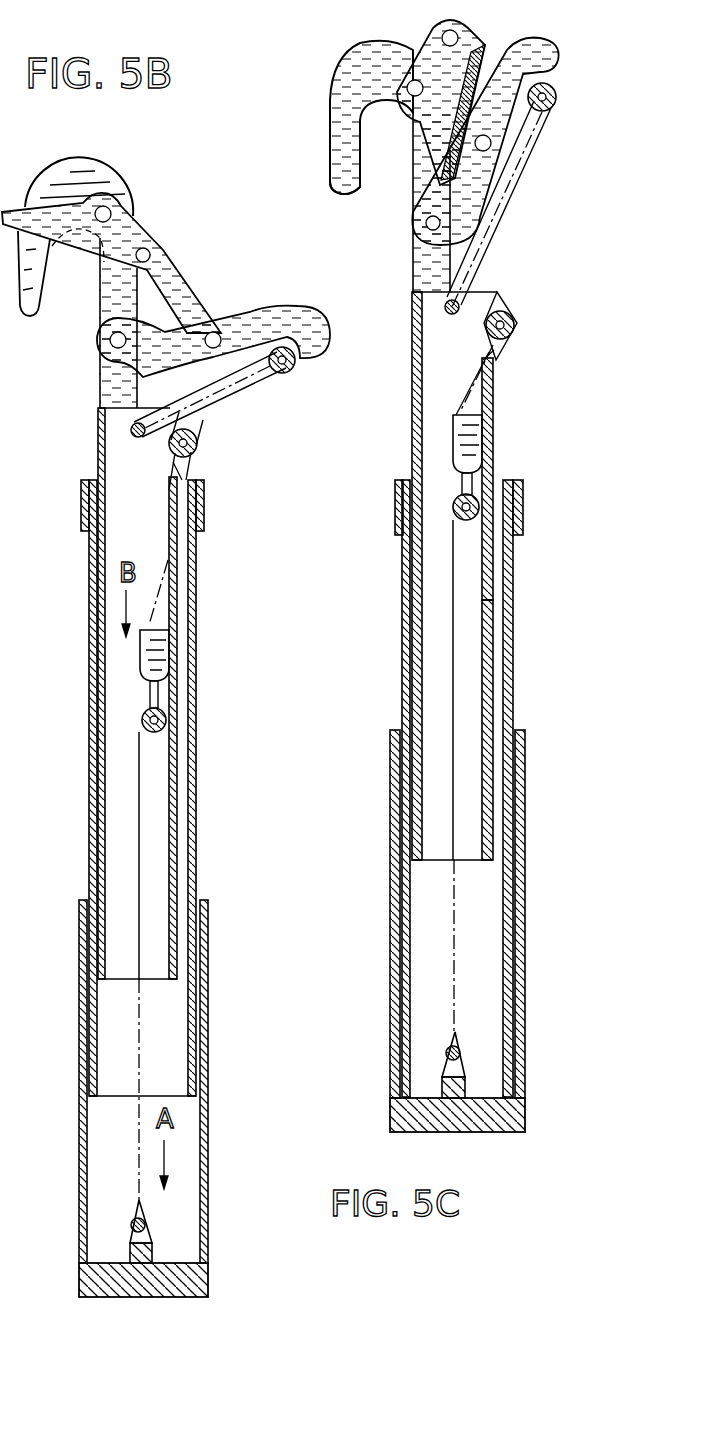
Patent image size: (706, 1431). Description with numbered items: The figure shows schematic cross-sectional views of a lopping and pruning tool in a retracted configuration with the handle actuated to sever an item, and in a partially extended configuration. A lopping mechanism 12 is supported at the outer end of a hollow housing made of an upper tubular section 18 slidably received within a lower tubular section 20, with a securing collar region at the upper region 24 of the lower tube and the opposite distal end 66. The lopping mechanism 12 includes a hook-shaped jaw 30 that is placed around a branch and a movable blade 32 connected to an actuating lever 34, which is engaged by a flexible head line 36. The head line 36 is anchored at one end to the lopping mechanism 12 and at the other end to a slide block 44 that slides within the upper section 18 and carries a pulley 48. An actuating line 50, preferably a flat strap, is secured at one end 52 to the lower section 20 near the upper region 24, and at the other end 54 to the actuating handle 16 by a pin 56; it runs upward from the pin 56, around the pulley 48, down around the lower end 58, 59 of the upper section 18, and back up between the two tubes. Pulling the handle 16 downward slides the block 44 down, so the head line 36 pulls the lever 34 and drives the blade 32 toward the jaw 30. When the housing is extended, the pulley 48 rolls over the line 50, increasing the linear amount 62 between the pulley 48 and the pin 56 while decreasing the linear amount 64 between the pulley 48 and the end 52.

In FIG. 5B, the lopping mechanism 12 is at (82, 162).
In FIG. 5C, the lopping mechanism 12 is at (342, 59).
In FIG. 5B, the actuating handle 16 is at (85, 1275).
In FIG. 5C, the actuating handle 16 is at (397, 1114).
In FIG. 5B, the upper tubular section 18 is at (95, 832).
In FIG. 5C, the upper tubular section 18 is at (418, 680).
In FIG. 5B, the lower tubular section 20 is at (192, 1050).
In FIG. 5C, the lower tubular section 20 is at (400, 590).
In FIG. 5B, the upper region 24 is at (86, 517).
In FIG. 5C, the upper region 24 is at (395, 518).
In FIG. 5B, the hook-shaped jaw 30 is at (37, 317).
In FIG. 5C, the hook-shaped jaw 30 is at (333, 189).
In FIG. 5B, the movable blade 32 is at (8, 211).
In FIG. 5C, the movable blade 32 is at (413, 158).
In FIG. 5B, the actuating lever 34 is at (304, 305).
In FIG. 5C, the actuating lever 34 is at (530, 48).
In FIG. 5B, the head line 36 is at (262, 392).
In FIG. 5C, the head line 36 is at (513, 233).
In FIG. 5B, the slide block 44 is at (153, 657).
In FIG. 5C, the slide block 44 is at (480, 452).
In FIG. 5B, the pulley 48 is at (168, 715).
In FIG. 5C, the pulley 48 is at (458, 500).
In FIG. 5B, the actuating line 50 is at (139, 779).
In FIG. 5C, the actuating line 50 is at (452, 645).
In FIG. 5B, the end of actuating line 52 is at (203, 531).
In FIG. 5C, the end of actuating line 52 is at (523, 522).
In FIG. 5B, the other end of actuating line 54 is at (150, 1228).
In FIG. 5C, the other end of actuating line 54 is at (470, 1067).
In FIG. 5B, the pin 56 is at (130, 1215).
In FIG. 5C, the pin 56 is at (448, 1060).
In FIG. 5C, the lower end of upper section 58 is at (414, 855).
In FIG. 5B, the inner tube end 59 is at (105, 980).
In FIG. 5C, the linear amount of line 62 is at (455, 913).
In FIG. 5C, the linear amount of line 64 is at (476, 652).
In FIG. 5B, the distal end 66 is at (93, 1088).